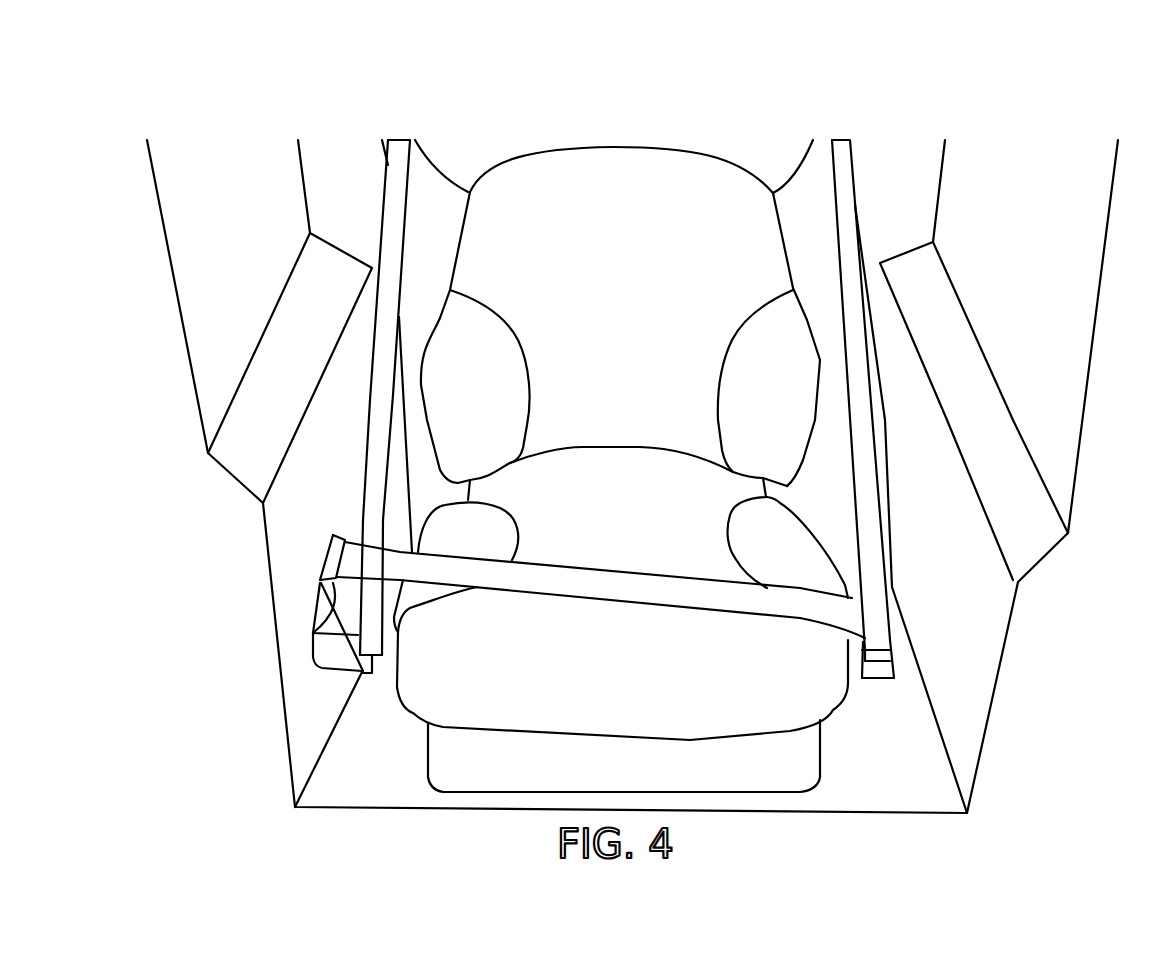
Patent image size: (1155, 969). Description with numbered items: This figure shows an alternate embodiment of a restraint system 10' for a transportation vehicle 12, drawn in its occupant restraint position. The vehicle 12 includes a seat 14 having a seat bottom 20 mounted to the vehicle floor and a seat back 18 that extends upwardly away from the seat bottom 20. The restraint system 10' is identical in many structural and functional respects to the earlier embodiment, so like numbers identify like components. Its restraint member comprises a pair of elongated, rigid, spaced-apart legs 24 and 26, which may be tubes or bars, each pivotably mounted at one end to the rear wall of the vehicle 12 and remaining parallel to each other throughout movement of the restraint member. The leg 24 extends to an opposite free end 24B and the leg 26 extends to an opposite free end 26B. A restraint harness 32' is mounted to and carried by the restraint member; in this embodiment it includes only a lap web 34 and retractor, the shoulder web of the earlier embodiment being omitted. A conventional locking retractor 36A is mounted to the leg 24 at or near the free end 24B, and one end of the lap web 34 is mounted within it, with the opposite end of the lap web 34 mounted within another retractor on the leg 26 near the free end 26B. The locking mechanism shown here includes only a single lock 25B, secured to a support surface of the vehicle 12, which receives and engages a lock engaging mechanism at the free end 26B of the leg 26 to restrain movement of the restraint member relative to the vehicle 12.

The restraint system 10' is at (952, 396).
The transportation vehicle 12 is at (1012, 405).
The seat 14 is at (467, 770).
The seat back 18 is at (648, 256).
The seat bottom 20 is at (625, 691).
The leg 24 is at (408, 202).
The free end 24B is at (378, 663).
The lock 25B is at (878, 685).
The leg 26 is at (843, 352).
The free end 26B is at (895, 673).
The restraint harness 32' is at (598, 547).
The lap web 34 is at (538, 593).
The retractor 36A is at (312, 643).